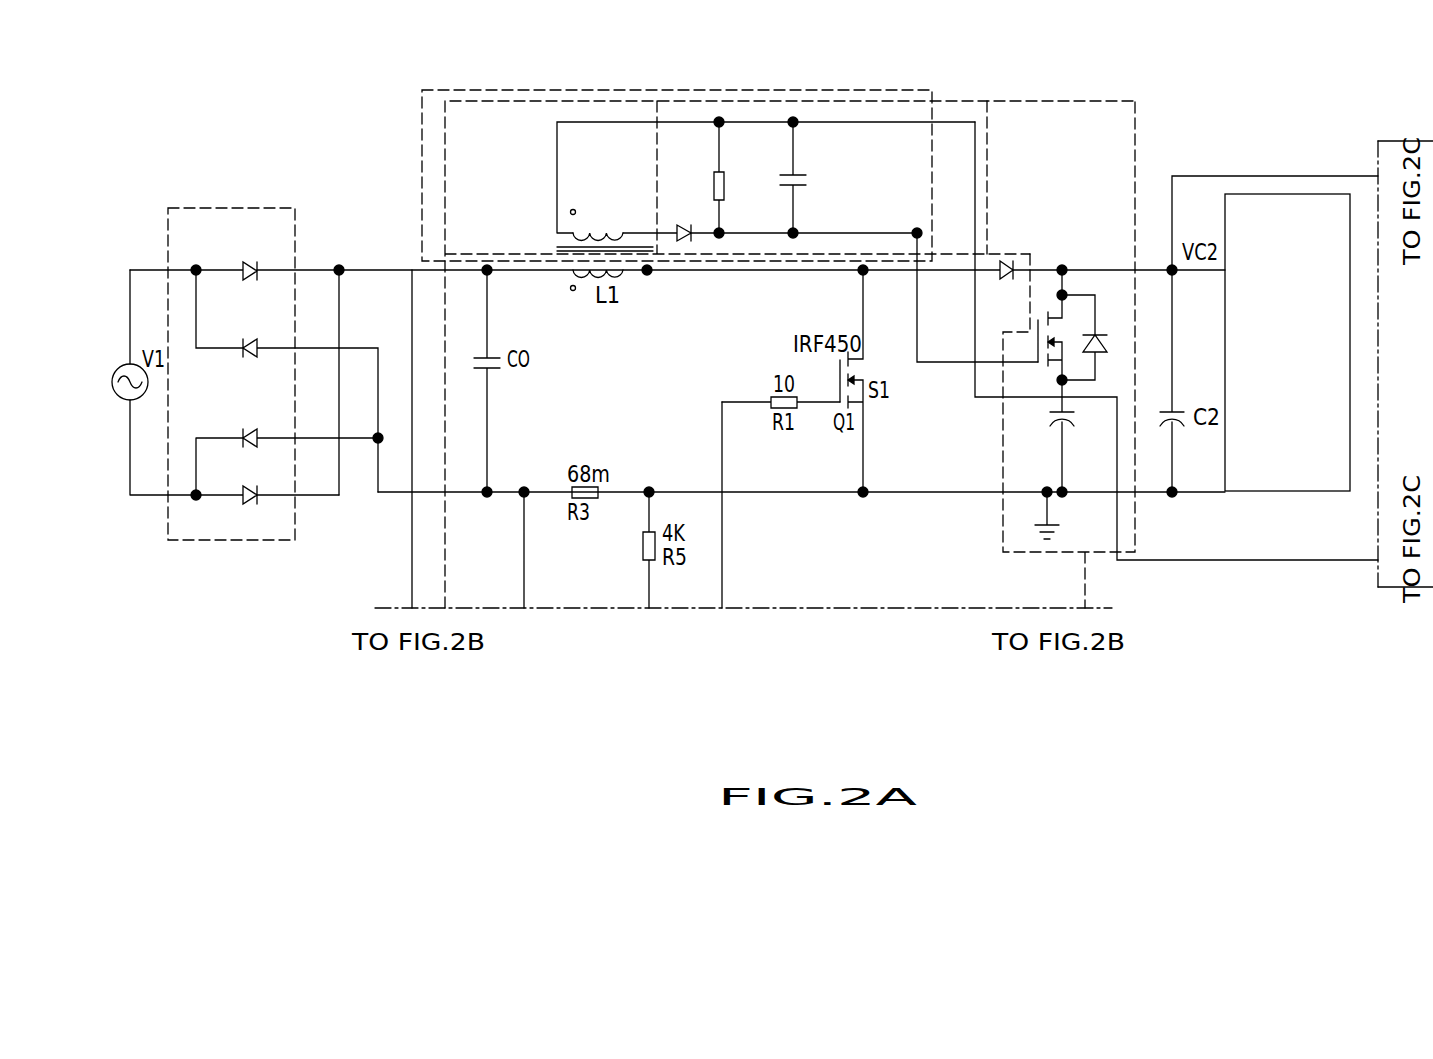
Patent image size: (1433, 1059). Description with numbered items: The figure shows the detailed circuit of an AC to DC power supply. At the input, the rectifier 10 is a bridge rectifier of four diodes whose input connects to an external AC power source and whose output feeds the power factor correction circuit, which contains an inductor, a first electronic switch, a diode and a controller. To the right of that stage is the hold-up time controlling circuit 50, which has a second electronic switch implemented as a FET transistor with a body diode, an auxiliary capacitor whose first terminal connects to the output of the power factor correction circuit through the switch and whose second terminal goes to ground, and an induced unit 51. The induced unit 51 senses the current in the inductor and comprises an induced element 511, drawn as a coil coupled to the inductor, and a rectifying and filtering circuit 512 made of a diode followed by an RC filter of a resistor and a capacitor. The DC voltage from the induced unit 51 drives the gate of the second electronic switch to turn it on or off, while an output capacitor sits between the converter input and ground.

The rectifier 10 is at (248, 207).
The hold-up time controlling circuit 50 is at (1112, 101).
The induced unit 51 is at (690, 89).
The induced element 511 is at (538, 101).
The rectifying and filtering circuit 512 is at (953, 100).